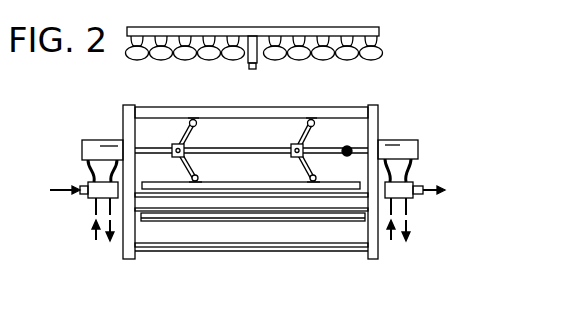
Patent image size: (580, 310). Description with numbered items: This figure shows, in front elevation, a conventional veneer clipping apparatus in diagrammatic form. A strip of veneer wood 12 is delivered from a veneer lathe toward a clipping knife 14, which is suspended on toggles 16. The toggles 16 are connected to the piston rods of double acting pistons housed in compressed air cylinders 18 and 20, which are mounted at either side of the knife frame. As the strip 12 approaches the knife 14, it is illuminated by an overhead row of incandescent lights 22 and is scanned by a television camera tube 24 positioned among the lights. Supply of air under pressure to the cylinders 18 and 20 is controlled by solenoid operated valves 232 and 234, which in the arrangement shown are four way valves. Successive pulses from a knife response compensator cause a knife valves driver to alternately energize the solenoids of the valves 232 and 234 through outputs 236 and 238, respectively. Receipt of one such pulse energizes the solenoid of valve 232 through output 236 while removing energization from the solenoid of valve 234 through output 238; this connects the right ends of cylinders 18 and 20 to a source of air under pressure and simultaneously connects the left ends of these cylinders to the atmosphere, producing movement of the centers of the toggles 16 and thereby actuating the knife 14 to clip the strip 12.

The strip of veneer wood 12 is at (273, 214).
The clipping knife 14 is at (220, 203).
The toggles 16 is at (190, 122).
The compressed air cylinder 18 is at (105, 139).
The compressed air cylinder 20 is at (404, 140).
The incandescent lights 22 is at (170, 60).
The television camera tube 24 is at (249, 67).
The solenoid operated valve 232 is at (88, 196).
The solenoid operated valve 234 is at (410, 199).
The output 236 is at (60, 189).
The output 238 is at (444, 189).